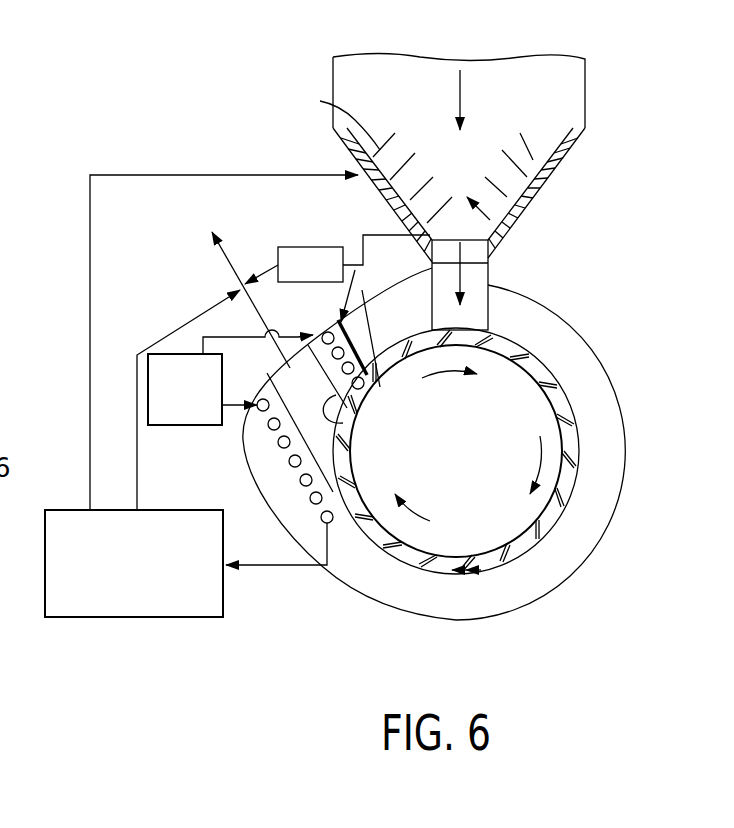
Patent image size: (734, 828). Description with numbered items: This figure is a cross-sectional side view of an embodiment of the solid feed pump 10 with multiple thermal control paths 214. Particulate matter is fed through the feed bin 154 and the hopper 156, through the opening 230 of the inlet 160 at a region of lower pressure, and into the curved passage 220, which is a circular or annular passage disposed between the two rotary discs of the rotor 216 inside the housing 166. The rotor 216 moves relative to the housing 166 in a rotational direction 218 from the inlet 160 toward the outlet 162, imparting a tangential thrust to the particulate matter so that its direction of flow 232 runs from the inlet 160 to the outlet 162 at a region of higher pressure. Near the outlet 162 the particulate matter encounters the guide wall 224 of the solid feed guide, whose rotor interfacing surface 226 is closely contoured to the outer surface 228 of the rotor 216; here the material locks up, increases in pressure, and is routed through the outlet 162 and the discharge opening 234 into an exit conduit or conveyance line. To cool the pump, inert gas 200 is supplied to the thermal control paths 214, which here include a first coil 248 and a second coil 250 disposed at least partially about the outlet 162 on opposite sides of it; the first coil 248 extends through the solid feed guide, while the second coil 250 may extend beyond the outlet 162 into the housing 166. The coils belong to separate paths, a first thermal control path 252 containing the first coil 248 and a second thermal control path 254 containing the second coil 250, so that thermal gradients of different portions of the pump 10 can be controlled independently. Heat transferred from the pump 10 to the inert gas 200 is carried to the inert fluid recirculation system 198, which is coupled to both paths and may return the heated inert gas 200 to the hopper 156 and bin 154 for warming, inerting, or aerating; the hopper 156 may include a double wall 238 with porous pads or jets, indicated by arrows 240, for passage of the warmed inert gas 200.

The solid feed pump 10 is at (600, 338).
The feed bin 154 is at (590, 72).
The hopper 156 is at (566, 178).
The inlet 160 is at (490, 278).
The outlet 162 is at (285, 357).
The housing 166 is at (625, 461).
The inert fluid recirculation system 198 is at (310, 247).
The inert gas 200 is at (121, 358).
The thermal control path 214 is at (362, 318).
The rotor 216 is at (520, 574).
The rotational direction 218 is at (424, 518).
The curved passage 220 is at (575, 443).
The guide wall 224 is at (357, 432).
The rotor interfacing surface 226 is at (403, 393).
The outer surface of the rotor 228 is at (568, 510).
The opening of the inlet 230 is at (490, 263).
The direction of flow 232 is at (479, 578).
The discharge opening 234 is at (227, 260).
The double wall 238 is at (337, 158).
The arrows indicating porous pads or jets 240 is at (320, 101).
The first coil 248 is at (392, 336).
The second coil 250 is at (240, 421).
The first thermal control path 252 is at (355, 270).
The second thermal control path 254 is at (297, 484).